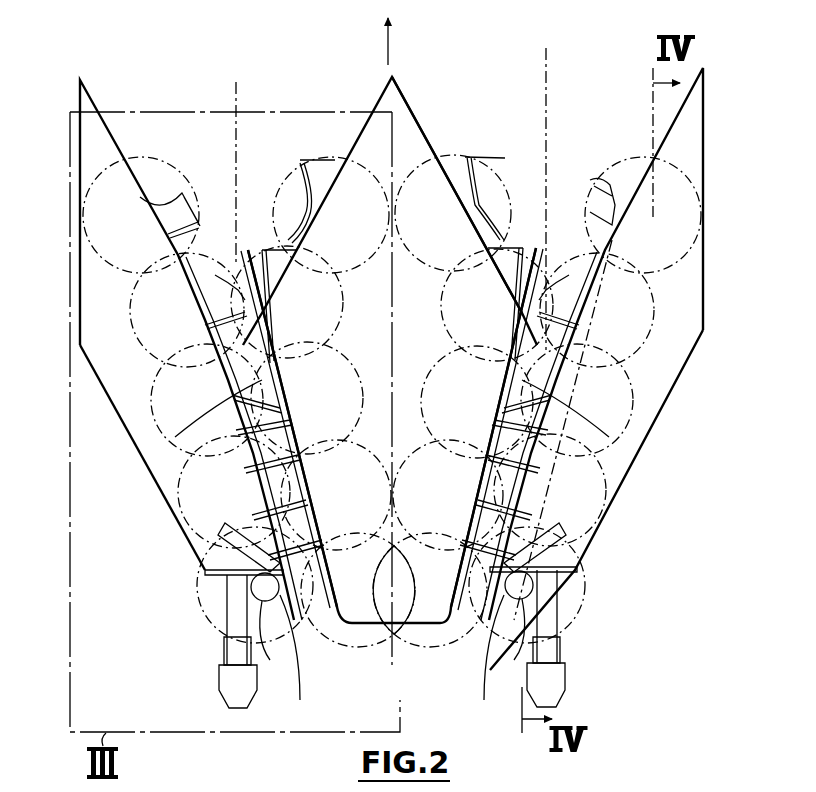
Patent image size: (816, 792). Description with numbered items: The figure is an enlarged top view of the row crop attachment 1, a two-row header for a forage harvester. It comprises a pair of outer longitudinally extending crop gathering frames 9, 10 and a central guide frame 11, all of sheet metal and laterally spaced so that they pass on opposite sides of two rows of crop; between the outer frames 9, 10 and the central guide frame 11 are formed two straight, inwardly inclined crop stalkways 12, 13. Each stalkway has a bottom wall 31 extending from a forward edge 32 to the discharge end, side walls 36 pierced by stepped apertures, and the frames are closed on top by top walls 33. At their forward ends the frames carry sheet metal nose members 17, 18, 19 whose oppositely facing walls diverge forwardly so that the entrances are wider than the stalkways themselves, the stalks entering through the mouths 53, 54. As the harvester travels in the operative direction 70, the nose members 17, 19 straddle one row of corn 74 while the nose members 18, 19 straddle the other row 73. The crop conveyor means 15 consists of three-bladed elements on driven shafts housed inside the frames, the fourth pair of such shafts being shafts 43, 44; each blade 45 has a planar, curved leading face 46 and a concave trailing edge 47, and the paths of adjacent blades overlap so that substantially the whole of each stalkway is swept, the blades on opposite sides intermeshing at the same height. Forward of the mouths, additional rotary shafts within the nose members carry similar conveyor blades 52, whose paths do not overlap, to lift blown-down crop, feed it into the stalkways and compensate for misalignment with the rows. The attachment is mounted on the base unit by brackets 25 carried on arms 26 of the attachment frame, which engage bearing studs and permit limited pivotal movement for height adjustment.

The row crop attachment 1 is at (708, 72).
The outer crop gathering frame 9 is at (120, 416).
The outer crop gathering frame 10 is at (644, 442).
The central guide frame 11 is at (395, 412).
The crop stalkway 12 is at (322, 372).
The crop stalkway 13 is at (470, 350).
The crop conveyor means 15 is at (128, 318).
The nose member 17 is at (96, 110).
The nose member 18 is at (671, 126).
The nose member 19 is at (432, 150).
The bracket 25 is at (220, 692).
The arm 26 is at (222, 657).
The bottom wall 31 is at (210, 540).
The forward edge 32 is at (160, 450).
The top wall 33 is at (118, 397).
The side wall 36 is at (253, 470).
The driven shaft 43 is at (222, 580).
The driven shaft 44 is at (563, 587).
The blade 45 is at (270, 278).
The leading face 46 is at (264, 310).
The trailing edge 47 is at (224, 296).
The crop conveyor blade 52 is at (178, 196).
The mouth 53 is at (244, 250).
The mouth 54 is at (548, 252).
The operative direction 70 is at (389, 60).
The row of corn 73 is at (547, 88).
The row of corn 74 is at (237, 110).